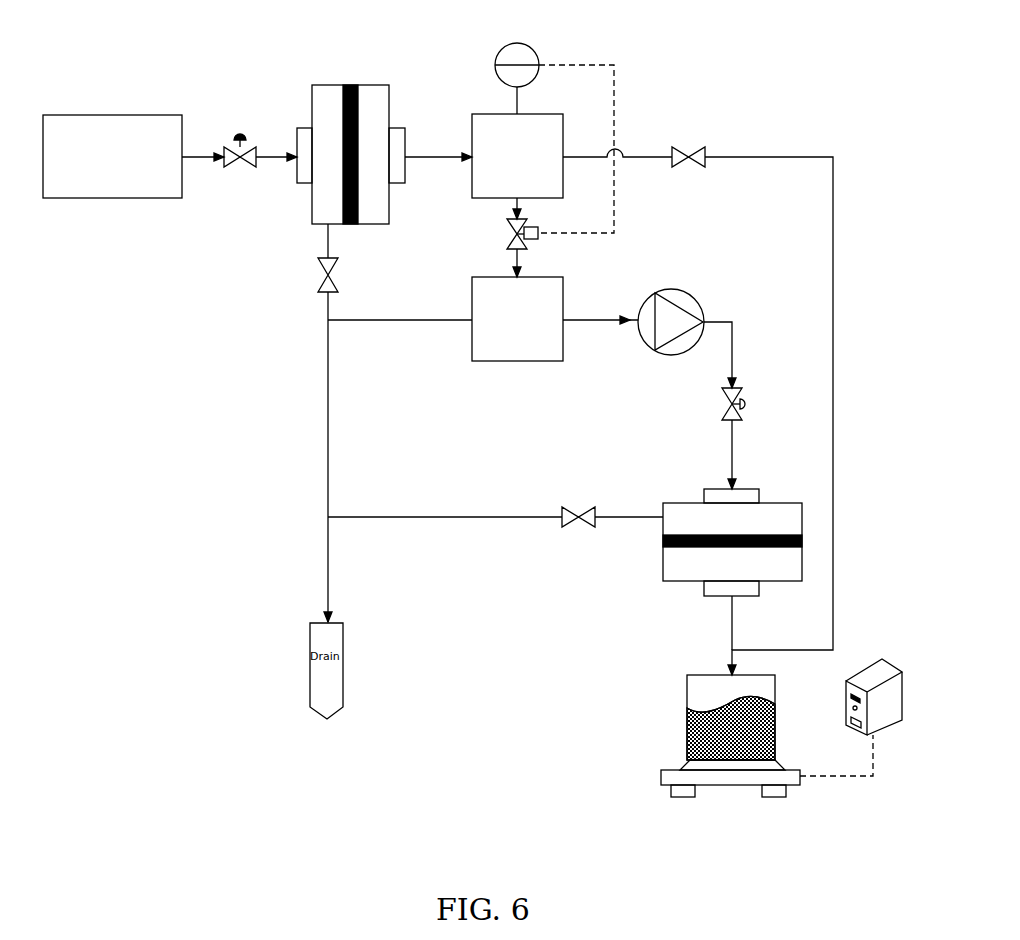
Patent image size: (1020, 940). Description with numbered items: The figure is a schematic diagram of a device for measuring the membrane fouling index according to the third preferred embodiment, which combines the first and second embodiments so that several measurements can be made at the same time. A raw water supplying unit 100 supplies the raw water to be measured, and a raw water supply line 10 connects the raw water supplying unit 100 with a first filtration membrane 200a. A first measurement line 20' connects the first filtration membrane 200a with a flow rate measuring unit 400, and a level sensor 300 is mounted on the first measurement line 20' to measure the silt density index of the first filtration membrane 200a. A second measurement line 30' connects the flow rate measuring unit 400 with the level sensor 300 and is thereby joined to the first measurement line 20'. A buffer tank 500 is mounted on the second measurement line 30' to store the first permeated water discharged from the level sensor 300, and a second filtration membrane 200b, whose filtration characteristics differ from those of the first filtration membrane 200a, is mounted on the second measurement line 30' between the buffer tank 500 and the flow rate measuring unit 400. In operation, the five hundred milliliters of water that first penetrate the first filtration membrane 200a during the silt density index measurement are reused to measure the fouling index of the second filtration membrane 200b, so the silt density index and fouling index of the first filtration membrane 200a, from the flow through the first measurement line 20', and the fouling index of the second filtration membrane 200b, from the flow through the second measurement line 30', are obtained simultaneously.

The raw water supplying unit 100 is at (113, 114).
The raw water supply line 10 is at (276, 161).
The first filtration membrane 200a is at (368, 85).
The level sensor 300 is at (545, 114).
The SDI/MFI-1 measurement line 20' is at (698, 370).
The buffer tank 500 is at (515, 362).
The SDI/MFI-2 measurement line 30' is at (751, 387).
The second filtration membrane 200b is at (790, 503).
The flow rate measuring unit 400 is at (687, 735).